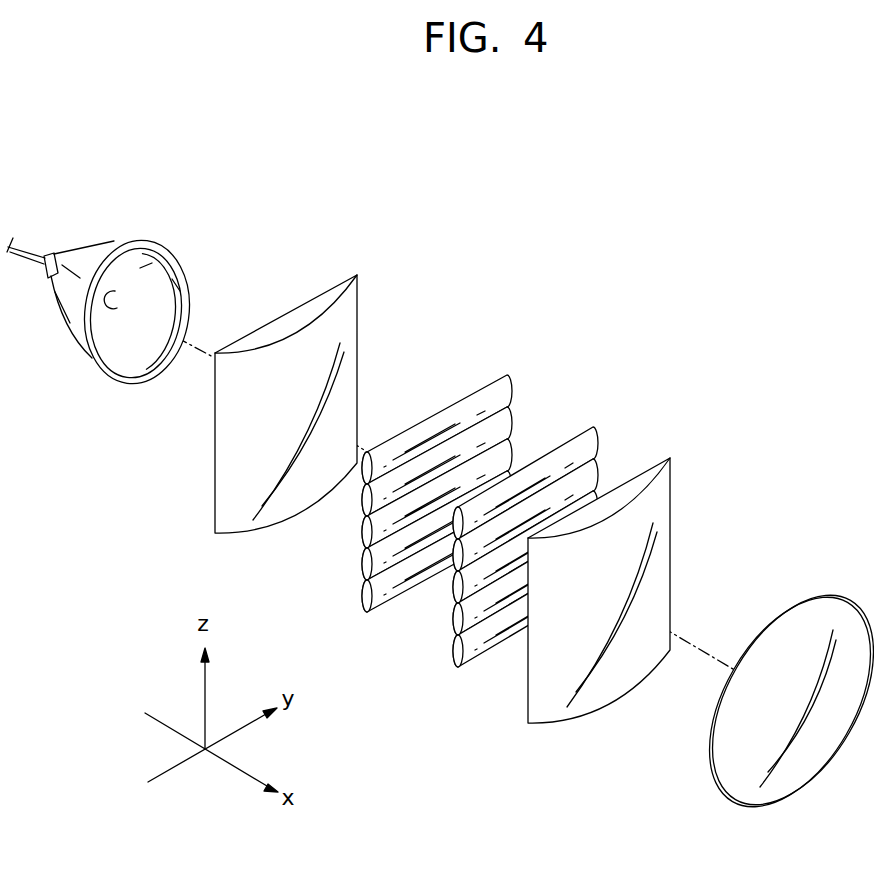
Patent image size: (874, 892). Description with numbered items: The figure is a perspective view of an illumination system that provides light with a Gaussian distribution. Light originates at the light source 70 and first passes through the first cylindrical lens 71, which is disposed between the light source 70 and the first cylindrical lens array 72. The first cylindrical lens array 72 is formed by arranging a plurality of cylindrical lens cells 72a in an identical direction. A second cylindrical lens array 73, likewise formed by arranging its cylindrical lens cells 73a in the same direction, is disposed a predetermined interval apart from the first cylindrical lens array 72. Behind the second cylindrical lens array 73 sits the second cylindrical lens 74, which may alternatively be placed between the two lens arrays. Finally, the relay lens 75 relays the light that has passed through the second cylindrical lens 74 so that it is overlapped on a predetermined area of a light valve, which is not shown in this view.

The light source 70 is at (122, 242).
The first cylindrical lens 71 is at (333, 290).
The first cylindrical lens array 72 is at (500, 378).
The cylindrical lens cells 72a is at (403, 552).
The second cylindrical lens array 73 is at (589, 427).
The cylindrical lens cells 73a is at (493, 603).
The second cylindrical lens 74 is at (656, 470).
The relay lens 75 is at (823, 598).